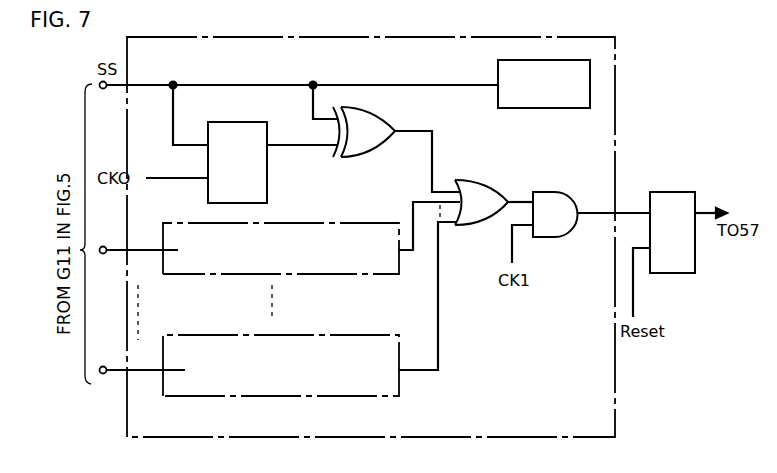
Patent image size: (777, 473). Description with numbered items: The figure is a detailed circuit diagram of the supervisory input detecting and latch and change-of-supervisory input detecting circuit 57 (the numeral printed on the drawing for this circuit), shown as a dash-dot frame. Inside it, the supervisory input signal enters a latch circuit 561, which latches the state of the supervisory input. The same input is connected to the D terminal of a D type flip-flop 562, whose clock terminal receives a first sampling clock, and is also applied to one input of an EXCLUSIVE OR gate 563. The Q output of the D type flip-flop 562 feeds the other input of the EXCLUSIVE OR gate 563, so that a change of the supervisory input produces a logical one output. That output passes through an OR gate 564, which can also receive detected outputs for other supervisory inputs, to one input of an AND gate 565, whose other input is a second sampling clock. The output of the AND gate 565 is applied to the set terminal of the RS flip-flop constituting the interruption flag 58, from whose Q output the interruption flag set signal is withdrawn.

The supervisory input detecting and latch and change-of-supervisory input detecting 57 is at (470, 44).
The interruption flag 58 is at (667, 192).
The latch circuit 561 is at (556, 103).
The D type flip-flop 562 is at (267, 181).
The EXCLUSIVE OR gate 563 is at (372, 118).
The OR gate 564 is at (470, 185).
The AND gate 565 is at (568, 183).